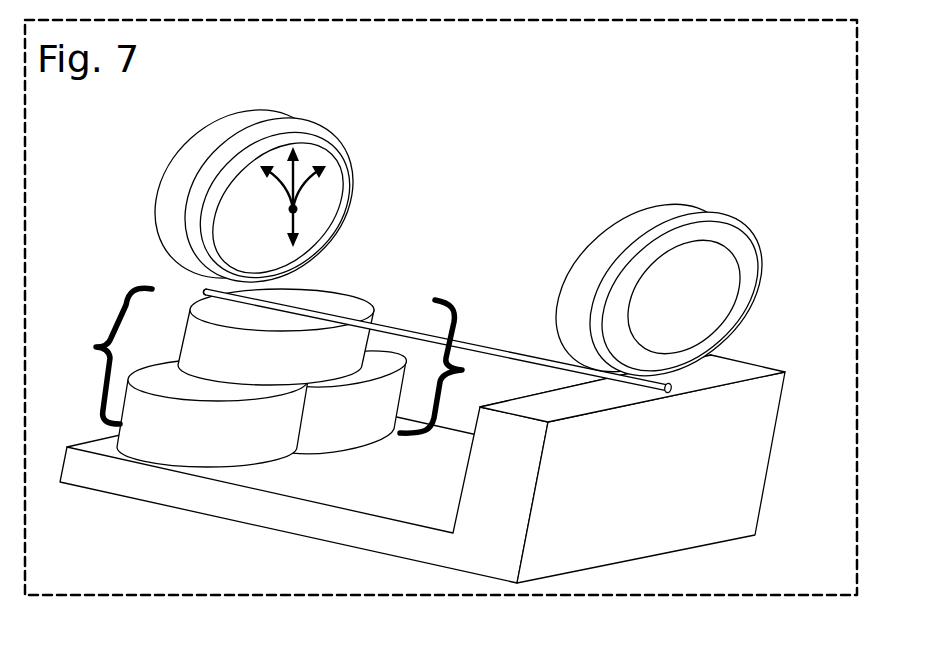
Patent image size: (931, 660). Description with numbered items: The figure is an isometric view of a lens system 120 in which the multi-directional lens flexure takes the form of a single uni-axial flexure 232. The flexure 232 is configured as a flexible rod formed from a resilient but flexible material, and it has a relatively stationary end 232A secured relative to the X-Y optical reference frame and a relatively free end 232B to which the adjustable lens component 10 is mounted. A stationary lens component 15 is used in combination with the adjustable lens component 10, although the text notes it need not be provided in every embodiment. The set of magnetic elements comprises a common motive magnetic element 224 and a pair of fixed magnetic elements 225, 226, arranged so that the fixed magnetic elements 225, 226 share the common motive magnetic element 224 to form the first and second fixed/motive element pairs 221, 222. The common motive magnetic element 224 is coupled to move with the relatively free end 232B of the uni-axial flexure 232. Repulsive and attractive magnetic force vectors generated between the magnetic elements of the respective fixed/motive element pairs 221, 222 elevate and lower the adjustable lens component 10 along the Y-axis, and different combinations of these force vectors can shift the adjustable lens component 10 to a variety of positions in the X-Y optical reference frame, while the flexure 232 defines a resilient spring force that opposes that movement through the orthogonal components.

The lens system 120 is at (700, 132).
The adjustable lens component 10 is at (347, 135).
The stationary lens component 15 is at (741, 320).
The first fixed/motive element pair 221 is at (103, 356).
The second fixed/motive element pair 222 is at (452, 366).
The common motive magnetic element 224 is at (357, 305).
The fixed magnetic element 225 is at (276, 463).
The fixed magnetic element 226 is at (365, 443).
The uni-axial flexure 232 is at (484, 343).
The relatively stationary end 232A is at (628, 386).
The relatively free end 232B is at (267, 308).